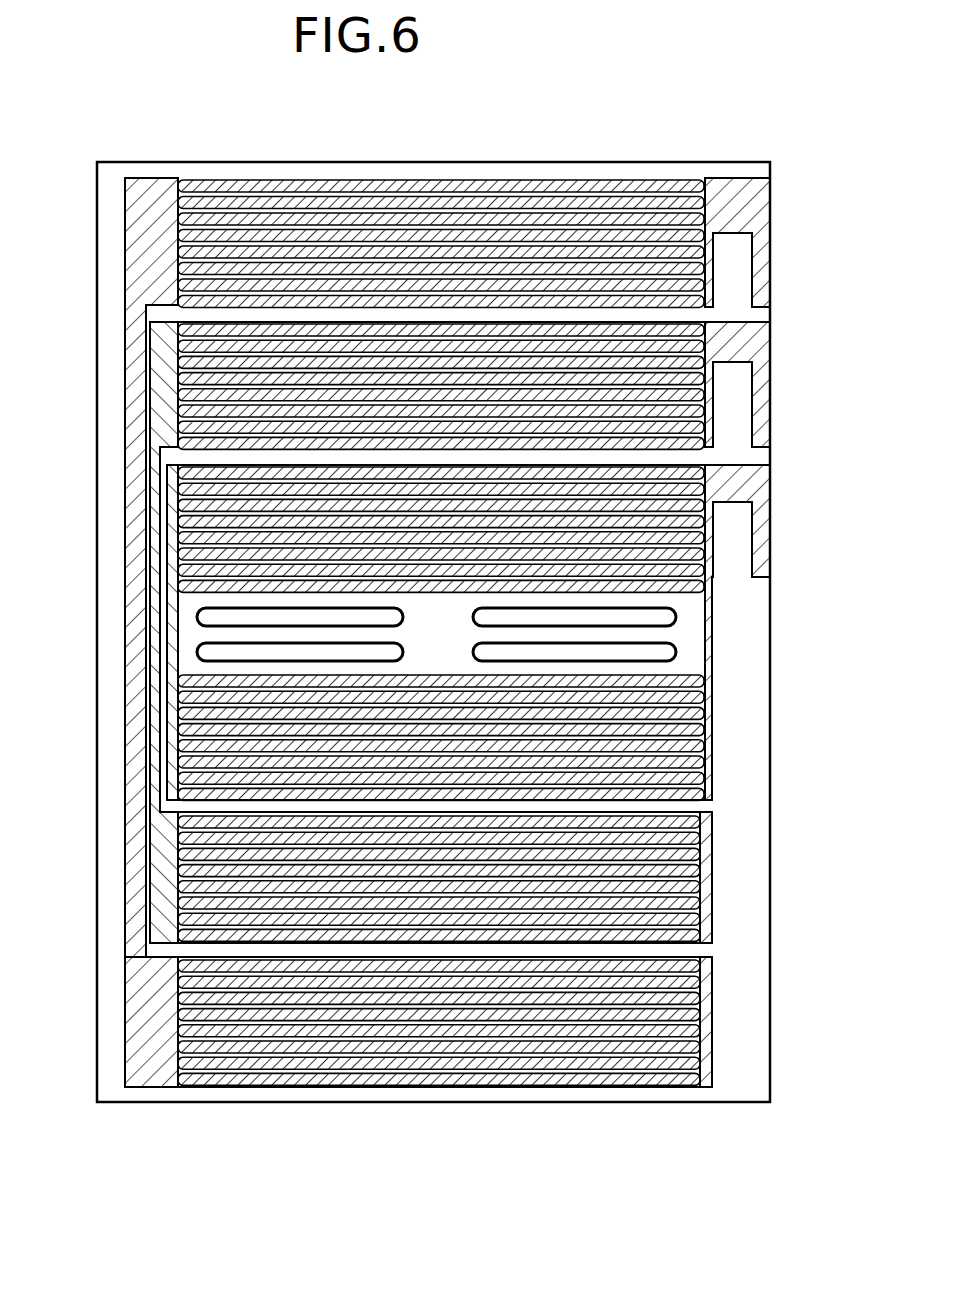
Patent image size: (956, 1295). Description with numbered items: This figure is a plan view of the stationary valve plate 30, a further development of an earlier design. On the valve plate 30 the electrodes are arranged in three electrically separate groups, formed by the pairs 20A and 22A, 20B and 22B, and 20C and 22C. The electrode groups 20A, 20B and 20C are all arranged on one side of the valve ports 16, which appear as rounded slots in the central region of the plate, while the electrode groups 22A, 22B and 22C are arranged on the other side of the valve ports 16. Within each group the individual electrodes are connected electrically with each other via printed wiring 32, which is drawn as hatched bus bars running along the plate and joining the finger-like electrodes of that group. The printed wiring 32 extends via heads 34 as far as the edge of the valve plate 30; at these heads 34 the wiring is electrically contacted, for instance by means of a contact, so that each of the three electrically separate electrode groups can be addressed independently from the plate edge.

The valve ports 16 is at (666, 651).
The electrode group 20A is at (667, 268).
The electrode group 20B is at (700, 397).
The electrode group 20C is at (690, 557).
The electrode group 22A is at (641, 1010).
The electrode group 22B is at (690, 903).
The electrode group 22C is at (700, 760).
The stationary valve plate 30 is at (748, 948).
The printed wiring 32 is at (148, 652).
The heads 34 is at (763, 260).